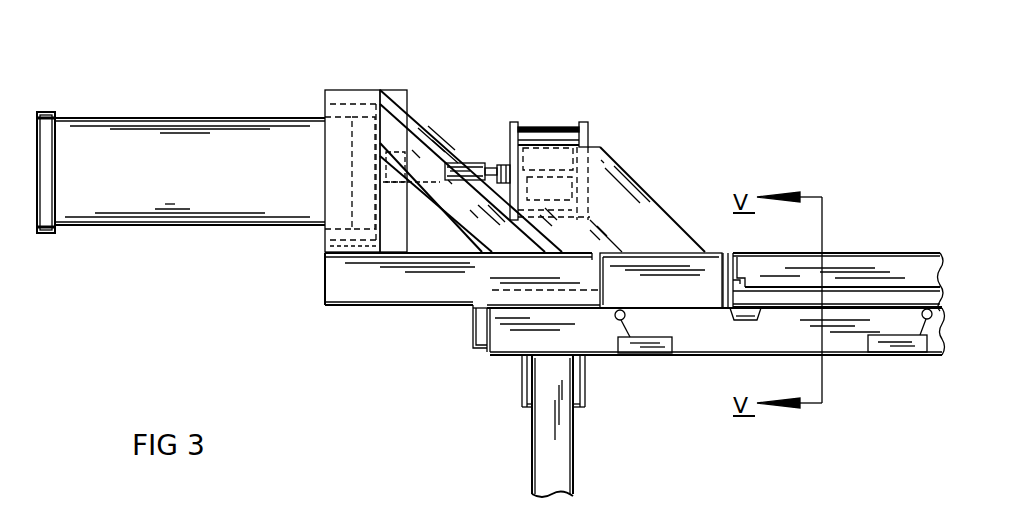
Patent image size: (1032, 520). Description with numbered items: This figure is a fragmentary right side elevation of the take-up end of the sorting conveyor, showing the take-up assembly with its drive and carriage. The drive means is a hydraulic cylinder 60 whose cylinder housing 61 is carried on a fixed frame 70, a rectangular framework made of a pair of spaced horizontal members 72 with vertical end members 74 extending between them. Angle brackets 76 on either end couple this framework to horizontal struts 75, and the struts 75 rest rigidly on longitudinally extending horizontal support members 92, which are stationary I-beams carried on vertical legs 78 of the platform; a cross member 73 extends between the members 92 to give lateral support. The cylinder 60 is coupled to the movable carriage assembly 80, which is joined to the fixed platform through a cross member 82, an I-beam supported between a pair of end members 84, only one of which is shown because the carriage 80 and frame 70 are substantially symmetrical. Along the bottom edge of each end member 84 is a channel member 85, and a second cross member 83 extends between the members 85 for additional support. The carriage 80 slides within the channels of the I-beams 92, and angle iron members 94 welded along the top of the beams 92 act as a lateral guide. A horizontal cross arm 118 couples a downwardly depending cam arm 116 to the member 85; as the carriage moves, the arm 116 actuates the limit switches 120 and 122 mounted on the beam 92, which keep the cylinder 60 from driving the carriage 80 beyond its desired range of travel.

The hydraulic cylinder 60 is at (131, 108).
The cylinder housing 61 is at (236, 117).
The fixed frame 70 is at (378, 82).
The horizontal members 72 is at (344, 90).
The cross member 73 is at (470, 350).
The vertical end members 74 is at (325, 160).
The horizontal struts 75 is at (364, 306).
The angle brackets 76 is at (425, 137).
The vertical legs 78 is at (592, 456).
The movable carriage assembly 80 is at (623, 136).
The cross member 82 is at (545, 150).
The second cross member 83 is at (660, 250).
The end members 84 is at (638, 182).
The channel member 85 is at (902, 253).
The horizontal support members 92 is at (695, 332).
The angle iron members 94 is at (845, 297).
The cam arm 116 is at (743, 322).
The horizontal cross arm 118 is at (740, 268).
The limit switch 120 is at (641, 355).
The limit switch 122 is at (888, 356).